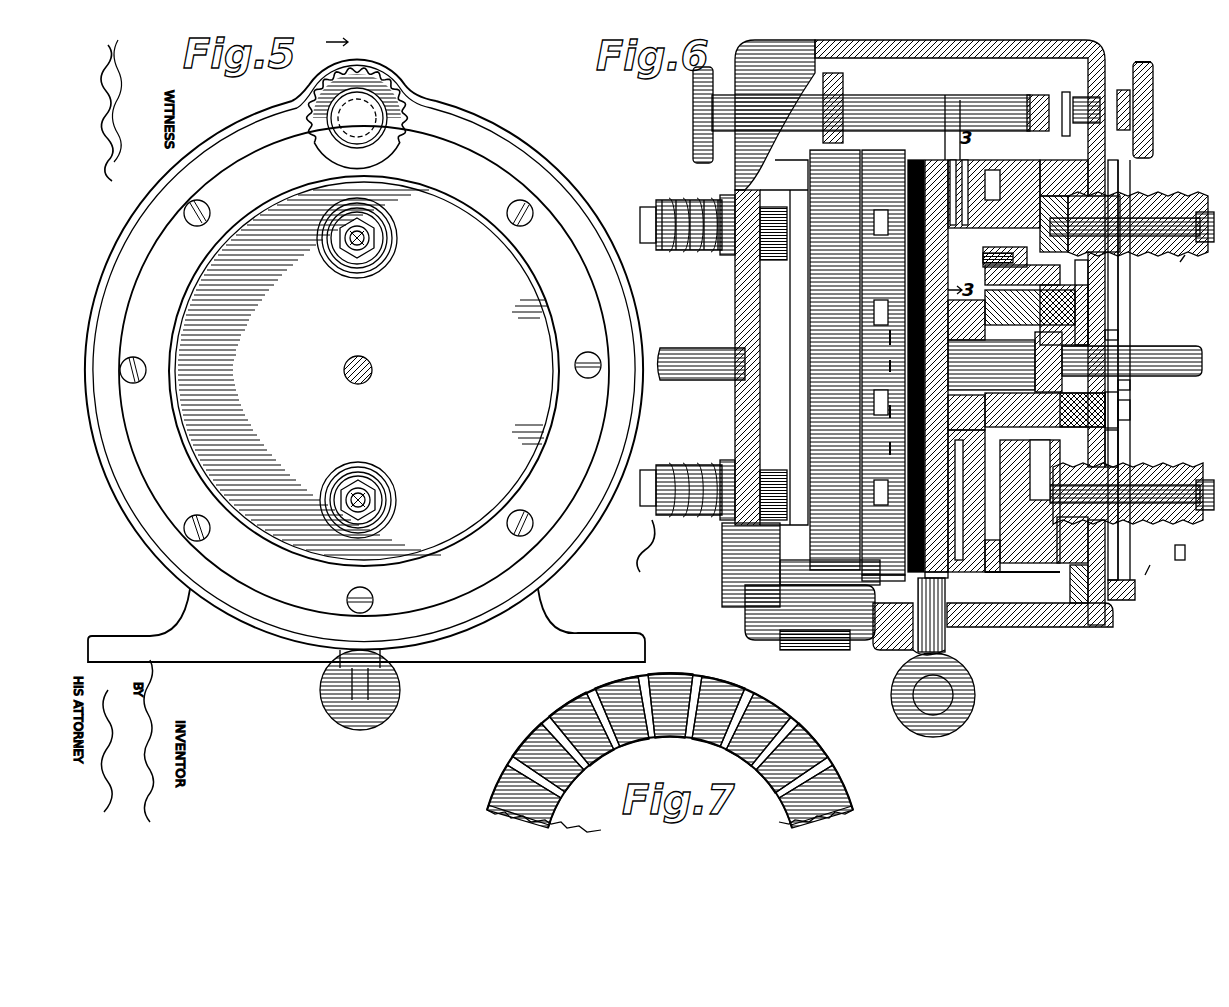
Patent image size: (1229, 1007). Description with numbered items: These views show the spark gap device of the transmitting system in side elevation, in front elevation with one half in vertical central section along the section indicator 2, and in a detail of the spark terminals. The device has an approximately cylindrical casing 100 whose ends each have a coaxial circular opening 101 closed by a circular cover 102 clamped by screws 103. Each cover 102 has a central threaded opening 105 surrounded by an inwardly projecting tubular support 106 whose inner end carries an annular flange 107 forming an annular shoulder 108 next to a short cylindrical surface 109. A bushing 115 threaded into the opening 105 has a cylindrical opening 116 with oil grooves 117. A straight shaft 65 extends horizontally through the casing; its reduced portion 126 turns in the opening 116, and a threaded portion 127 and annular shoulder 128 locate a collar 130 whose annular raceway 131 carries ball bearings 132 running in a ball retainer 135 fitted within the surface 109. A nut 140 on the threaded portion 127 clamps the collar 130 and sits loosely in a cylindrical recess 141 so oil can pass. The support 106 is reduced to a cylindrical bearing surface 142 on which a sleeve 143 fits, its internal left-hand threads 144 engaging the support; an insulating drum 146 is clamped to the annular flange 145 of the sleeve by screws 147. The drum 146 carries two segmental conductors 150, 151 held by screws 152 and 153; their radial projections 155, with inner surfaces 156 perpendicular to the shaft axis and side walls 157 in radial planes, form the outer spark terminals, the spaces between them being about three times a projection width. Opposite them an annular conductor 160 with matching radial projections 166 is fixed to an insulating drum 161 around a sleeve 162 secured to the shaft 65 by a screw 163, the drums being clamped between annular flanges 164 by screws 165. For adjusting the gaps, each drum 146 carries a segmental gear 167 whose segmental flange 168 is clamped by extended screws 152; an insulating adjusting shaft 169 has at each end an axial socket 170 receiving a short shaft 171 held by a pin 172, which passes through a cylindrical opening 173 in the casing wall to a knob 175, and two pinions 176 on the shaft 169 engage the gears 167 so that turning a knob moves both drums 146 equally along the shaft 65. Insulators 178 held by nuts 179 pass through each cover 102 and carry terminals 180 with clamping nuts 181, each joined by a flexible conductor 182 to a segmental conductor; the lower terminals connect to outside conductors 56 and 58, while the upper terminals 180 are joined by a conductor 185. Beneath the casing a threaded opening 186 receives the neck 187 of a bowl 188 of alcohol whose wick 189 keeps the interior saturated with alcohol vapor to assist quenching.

In FIG. 5, the section line 2 is at (343, 43).
In FIG. 6, the conductor 56 is at (1185, 560).
In FIG. 6, the conductor 58 is at (655, 547).
In FIG. 6, the shaft 65 is at (672, 382).
In FIG. 5, the casing 100 is at (478, 152).
In FIG. 6, the casing 100 is at (912, 48).
In FIG. 6, the circular opening 101 is at (1150, 130).
In FIG. 5, the cover 102 is at (585, 421).
In FIG. 6, the cover 102 is at (1128, 185).
In FIG. 5, the screws 103 is at (528, 205).
In FIG. 6, the screws 103 is at (1138, 600).
In FIG. 6, the threaded opening 105 is at (1118, 315).
In FIG. 6, the tubular support 106 is at (1110, 302).
In FIG. 6, the annular flange 107 is at (972, 412).
In FIG. 6, the annular shoulder 108 is at (970, 501).
In FIG. 6, the cylindrical surface 109 is at (1120, 422).
In FIG. 6, the bushing 115 is at (1120, 397).
In FIG. 6, the cylindrical opening 116 is at (1132, 385).
In FIG. 6, the oil grooves 117 is at (1120, 335).
In FIG. 5, the reduced portion 126 is at (369, 366).
In FIG. 6, the reduced portion 126 is at (1132, 360).
In FIG. 6, the threaded portion 127 is at (1132, 410).
In FIG. 6, the annular shoulder 128 is at (971, 320).
In FIG. 6, the collar 130 is at (991, 365).
In FIG. 6, the annular raceway 131 is at (1000, 500).
In FIG. 6, the ball bearings 132 is at (1059, 470).
In FIG. 6, the ball retainer 135 is at (1035, 270).
In FIG. 6, the nut 140 is at (1115, 292).
In FIG. 6, the cylindrical recess 141 is at (1068, 362).
In FIG. 6, the cylindrical bearing surface 142 is at (985, 258).
In FIG. 6, the sleeve 143 is at (988, 250).
In FIG. 6, the internal left-hand threads 144 is at (1100, 436).
In FIG. 6, the annular flange 145 is at (970, 572).
In FIG. 6, the insulating drum 146 is at (1025, 565).
In FIG. 6, the screws 147 is at (1060, 190).
In FIG. 6, the segmental conductor 150 is at (875, 175).
In FIG. 6, the segmental conductor 151 is at (880, 572).
In FIG. 6, the screws 152 is at (1020, 172).
In FIG. 6, the screws 153 is at (1005, 585).
In FIG. 7, the radial projections 155 is at (800, 703).
In FIG. 7, the inner surfaces 156 is at (745, 700).
In FIG. 7, the side walls 157 is at (600, 700).
In FIG. 6, the annular conductor 160 is at (952, 170).
In FIG. 6, the insulating drum 161 is at (916, 560).
In FIG. 6, the sleeve 162 is at (890, 410).
In FIG. 6, the screw 163 is at (890, 365).
In FIG. 6, the annular flanges 164 is at (885, 335).
In FIG. 6, the screws 165 is at (890, 447).
In FIG. 6, the radial projections 166 is at (960, 158).
In FIG. 6, the segmental gear 167 is at (830, 275).
In FIG. 6, the segmental flange 168 is at (1130, 180).
In FIG. 6, the adjusting shaft 169 is at (871, 113).
In FIG. 6, the axial socket 170 is at (1040, 95).
In FIG. 6, the short shaft 171 is at (1090, 105).
In FIG. 6, the pin 172 is at (1122, 88).
In FIG. 6, the cylindrical opening 173 is at (1153, 78).
In FIG. 5, the knob 175 is at (368, 112).
In FIG. 6, the knob 175 is at (693, 110).
In FIG. 6, the pinions 176 is at (843, 82).
In FIG. 5, the insulators 178 is at (382, 256).
In FIG. 6, the insulators 178 is at (1180, 216).
In FIG. 6, the nut 179 is at (1160, 462).
In FIG. 5, the terminal 180 is at (356, 246).
In FIG. 6, the terminal 180 is at (642, 498).
In FIG. 6, the clamping nut 181 is at (1130, 168).
In FIG. 6, the flexible conductor 182 is at (1060, 220).
In FIG. 6, the conductor 185 is at (662, 212).
In FIG. 6, the threaded opening 186 is at (990, 640).
In FIG. 6, the neck 187 is at (915, 640).
In FIG. 5, the bowl 188 is at (398, 680).
In FIG. 6, the bowl 188 is at (955, 722).
In FIG. 6, the wick 189 is at (985, 690).